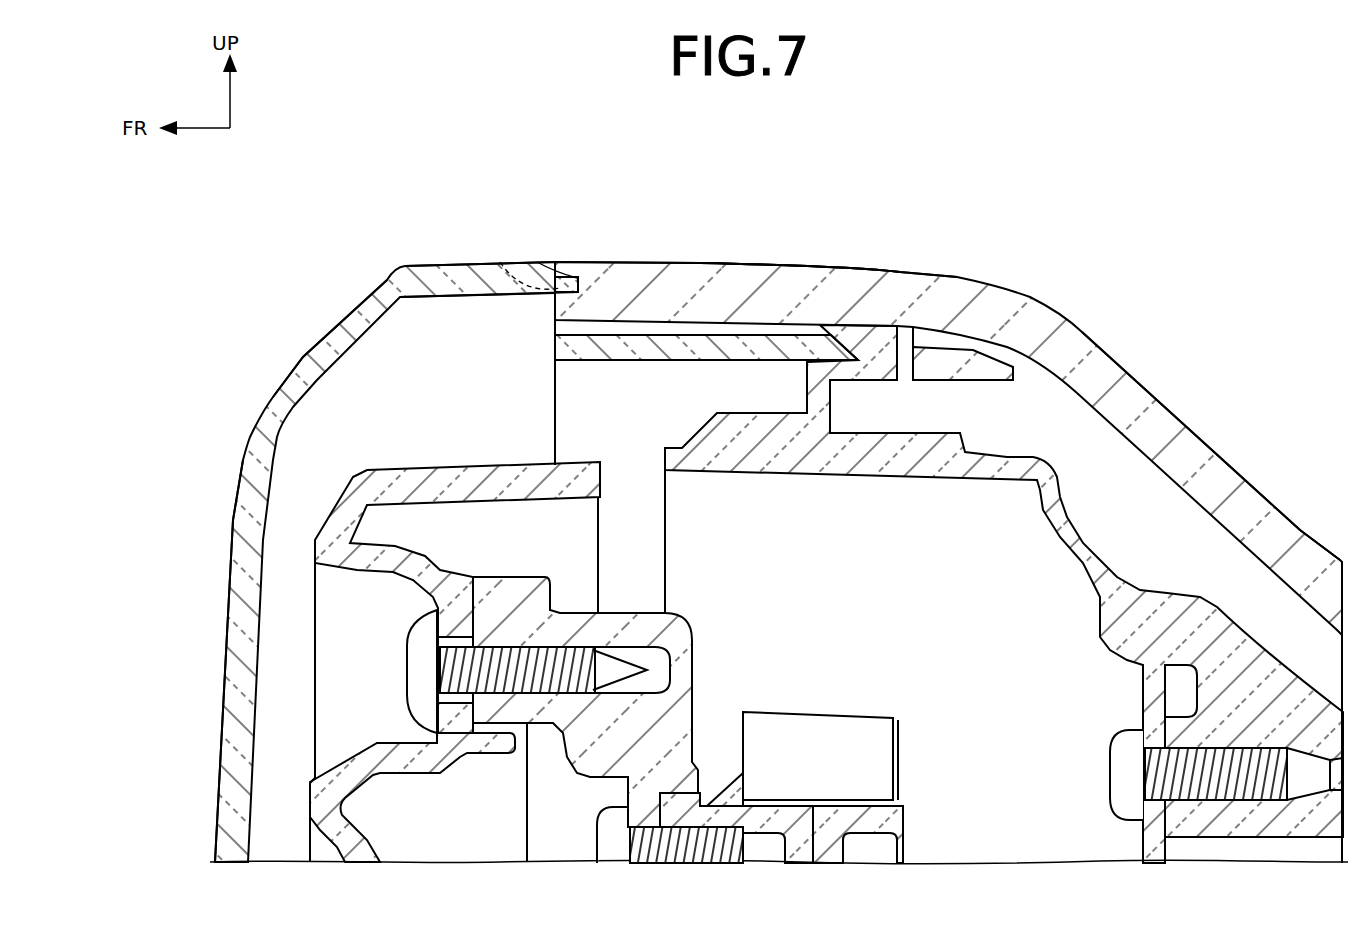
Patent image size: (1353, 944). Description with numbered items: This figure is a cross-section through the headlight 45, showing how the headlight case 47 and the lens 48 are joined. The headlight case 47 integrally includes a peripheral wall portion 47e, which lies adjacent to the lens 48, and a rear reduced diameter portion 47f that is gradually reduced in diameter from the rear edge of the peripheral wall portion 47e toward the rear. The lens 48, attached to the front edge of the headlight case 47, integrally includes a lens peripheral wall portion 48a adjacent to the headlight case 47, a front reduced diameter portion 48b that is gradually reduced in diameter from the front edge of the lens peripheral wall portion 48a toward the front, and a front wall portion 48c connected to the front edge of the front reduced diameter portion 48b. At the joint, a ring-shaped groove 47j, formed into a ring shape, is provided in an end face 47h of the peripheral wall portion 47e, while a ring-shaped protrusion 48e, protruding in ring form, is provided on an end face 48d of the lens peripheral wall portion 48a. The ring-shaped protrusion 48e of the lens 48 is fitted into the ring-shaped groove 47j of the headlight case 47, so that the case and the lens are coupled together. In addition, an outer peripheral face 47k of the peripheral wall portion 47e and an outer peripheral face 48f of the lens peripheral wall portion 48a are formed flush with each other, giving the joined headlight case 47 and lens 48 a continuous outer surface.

The headlight 45 is at (336, 272).
The headlight case 47 is at (1030, 288).
The peripheral wall portion 47e is at (815, 256).
The rear reduced diameter portion 47f is at (1183, 437).
The end face 47h is at (537, 262).
The ring-shaped groove 47j is at (507, 262).
The outer peripheral face 47k is at (753, 262).
The lens 48 is at (295, 347).
The lens peripheral wall portion 48a is at (425, 266).
The front reduced diameter portion 48b is at (268, 396).
The front wall portion 48c is at (227, 636).
The end face 48d is at (560, 272).
The ring-shaped protrusion 48e is at (580, 287).
The outer peripheral face 48f is at (452, 264).